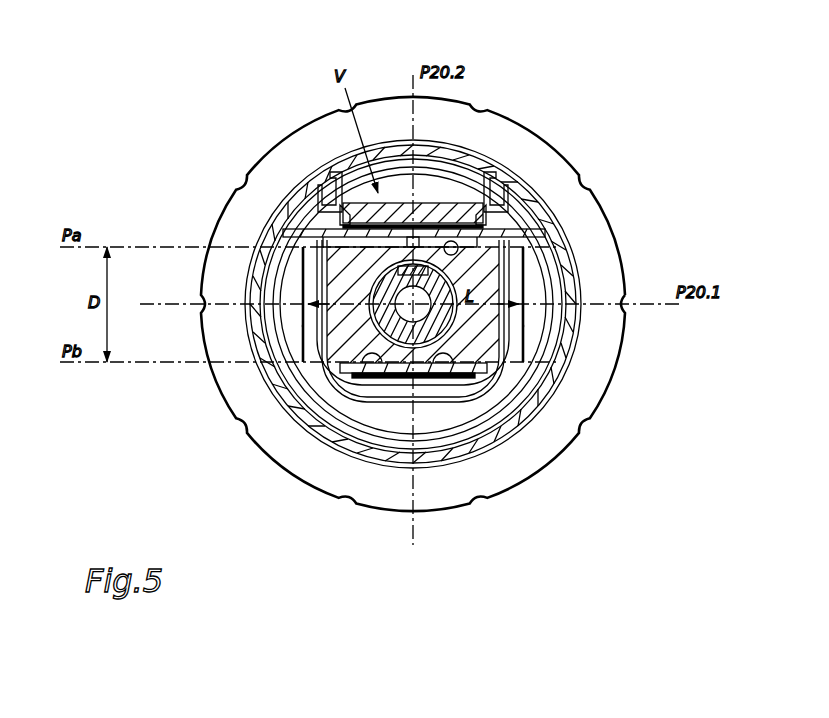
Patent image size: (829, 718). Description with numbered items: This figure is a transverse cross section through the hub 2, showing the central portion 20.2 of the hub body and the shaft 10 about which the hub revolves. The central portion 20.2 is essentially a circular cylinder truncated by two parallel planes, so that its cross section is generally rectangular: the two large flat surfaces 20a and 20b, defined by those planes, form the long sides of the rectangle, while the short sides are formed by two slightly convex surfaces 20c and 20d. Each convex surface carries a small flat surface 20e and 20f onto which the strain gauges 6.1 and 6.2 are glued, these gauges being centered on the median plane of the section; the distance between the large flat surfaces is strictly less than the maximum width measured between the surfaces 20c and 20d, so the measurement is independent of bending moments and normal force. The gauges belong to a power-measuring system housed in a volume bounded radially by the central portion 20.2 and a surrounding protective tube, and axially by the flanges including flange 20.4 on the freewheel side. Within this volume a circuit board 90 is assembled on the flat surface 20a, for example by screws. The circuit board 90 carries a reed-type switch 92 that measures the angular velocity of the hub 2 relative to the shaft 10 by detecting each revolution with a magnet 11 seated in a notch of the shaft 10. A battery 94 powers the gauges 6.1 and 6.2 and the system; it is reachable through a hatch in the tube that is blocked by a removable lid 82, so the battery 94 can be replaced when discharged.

The hub 2 is at (280, 100).
The shaft 10 is at (403, 332).
The magnet 11 is at (400, 262).
The removable lid 82 is at (375, 153).
The circuit board 90 is at (303, 256).
The reed-type switch 92 is at (455, 242).
The electric energy storage battery 94 is at (437, 215).
The large flat surface 20a is at (483, 243).
The large flat surface 20b is at (467, 375).
The slightly convex surface 20c is at (303, 258).
The slightly convex surface 20d is at (521, 247).
The small flat surface 20e is at (296, 333).
The small flat surface 20f is at (536, 289).
The central portion 20.2 is at (477, 285).
The flange 20.4 is at (540, 453).
The strain gauge 6.1 is at (298, 331).
The strain gauge 6.2 is at (527, 319).